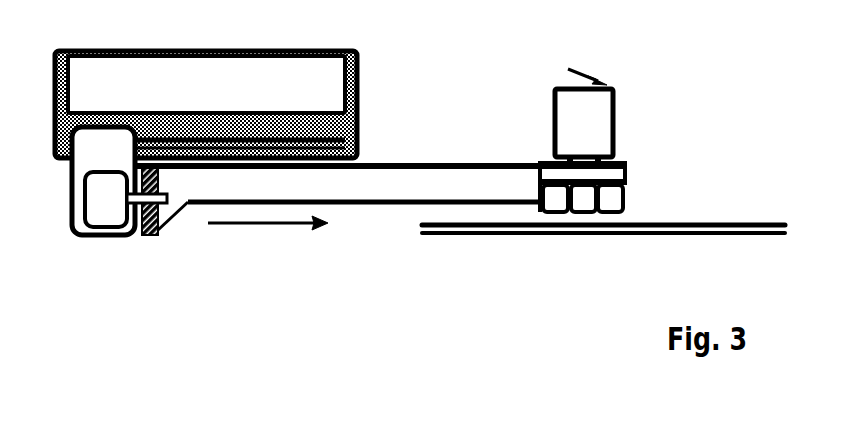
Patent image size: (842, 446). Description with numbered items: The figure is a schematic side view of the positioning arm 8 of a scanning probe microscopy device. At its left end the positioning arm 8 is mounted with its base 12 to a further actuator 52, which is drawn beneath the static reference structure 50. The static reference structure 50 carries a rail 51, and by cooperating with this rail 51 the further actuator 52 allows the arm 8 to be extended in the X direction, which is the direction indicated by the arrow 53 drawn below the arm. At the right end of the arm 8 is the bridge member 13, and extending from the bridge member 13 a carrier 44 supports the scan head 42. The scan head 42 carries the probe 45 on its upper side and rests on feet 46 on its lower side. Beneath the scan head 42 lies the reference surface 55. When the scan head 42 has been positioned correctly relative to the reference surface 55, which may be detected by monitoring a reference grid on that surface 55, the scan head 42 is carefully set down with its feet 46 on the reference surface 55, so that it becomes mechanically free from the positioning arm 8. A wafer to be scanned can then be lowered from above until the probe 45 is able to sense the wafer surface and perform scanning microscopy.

The positioning arm 8 is at (438, 164).
The base 12 is at (141, 236).
The bridge member 13 is at (541, 165).
The scan head 42 is at (613, 110).
The carrier 44 is at (626, 172).
The probe 45 is at (570, 70).
The feet 46 is at (625, 198).
The static reference structure 50 is at (358, 90).
The rail 51 is at (338, 145).
The further actuator 52 is at (69, 178).
The arrow 53 is at (267, 226).
The reference surface 55 is at (735, 224).